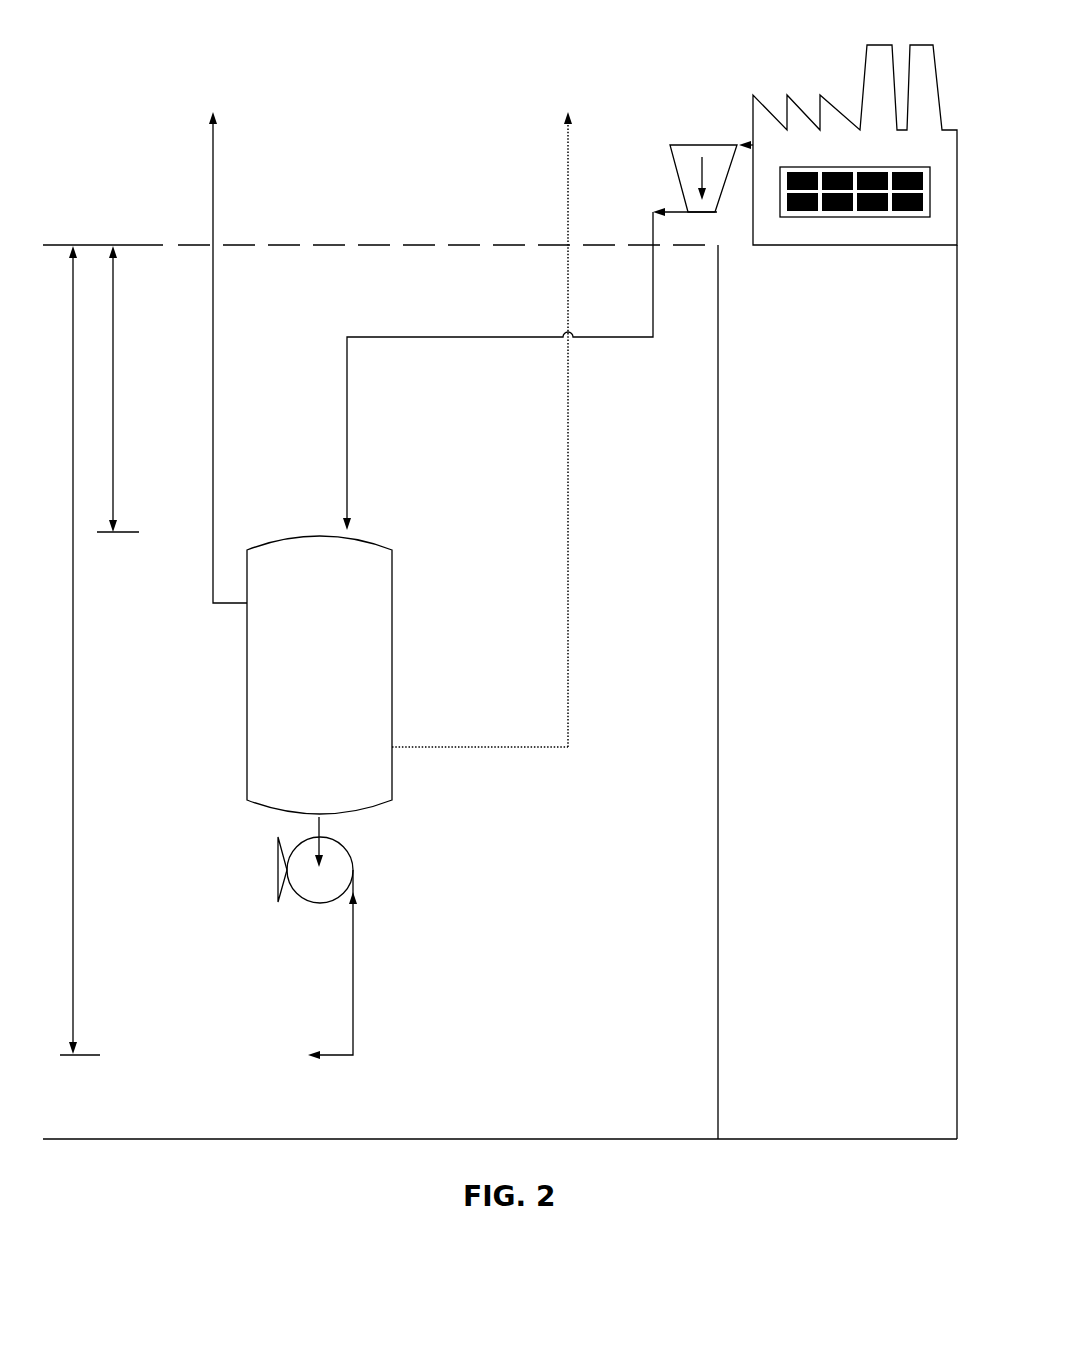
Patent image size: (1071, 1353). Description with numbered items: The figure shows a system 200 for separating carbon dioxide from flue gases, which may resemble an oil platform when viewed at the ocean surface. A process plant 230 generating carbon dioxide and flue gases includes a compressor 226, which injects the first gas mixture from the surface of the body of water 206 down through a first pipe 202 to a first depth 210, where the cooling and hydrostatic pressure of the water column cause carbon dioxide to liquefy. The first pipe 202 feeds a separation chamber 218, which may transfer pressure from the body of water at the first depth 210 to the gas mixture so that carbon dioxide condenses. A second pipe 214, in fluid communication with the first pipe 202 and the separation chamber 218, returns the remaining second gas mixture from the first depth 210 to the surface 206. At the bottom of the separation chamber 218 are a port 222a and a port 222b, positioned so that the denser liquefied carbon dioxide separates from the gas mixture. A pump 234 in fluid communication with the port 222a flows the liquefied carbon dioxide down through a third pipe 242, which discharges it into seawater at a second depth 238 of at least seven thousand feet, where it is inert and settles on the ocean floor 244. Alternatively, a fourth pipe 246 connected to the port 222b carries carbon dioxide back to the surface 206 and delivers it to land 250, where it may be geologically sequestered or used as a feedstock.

The system 200 is at (143, 104).
The first pipe 202 is at (533, 337).
The surface of a body of water 206 is at (367, 245).
The first depth 210 is at (113, 410).
The second pipe 214 is at (213, 173).
The separation chamber 218 is at (319, 675).
The port 222a is at (300, 818).
The port 222b is at (393, 742).
The compressor 226 is at (687, 144).
The process plant 230 is at (872, 67).
The pump 234 is at (330, 853).
The second depth 238 is at (74, 745).
The third pipe 242 is at (353, 985).
The ocean floor 244 is at (450, 1138).
The fourth pipe 246 is at (568, 387).
The land 250 is at (837, 692).